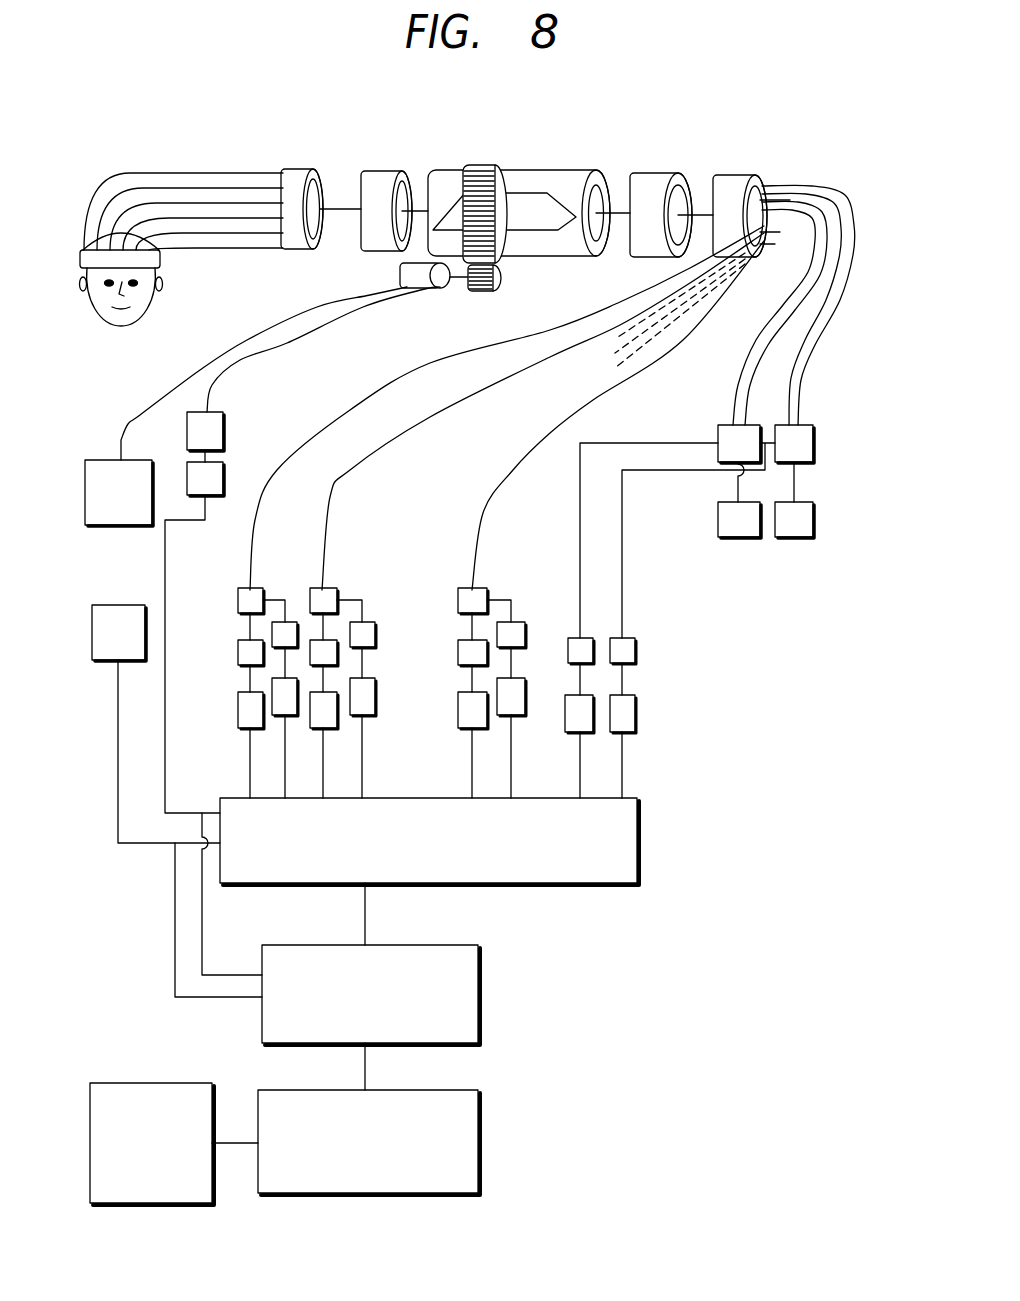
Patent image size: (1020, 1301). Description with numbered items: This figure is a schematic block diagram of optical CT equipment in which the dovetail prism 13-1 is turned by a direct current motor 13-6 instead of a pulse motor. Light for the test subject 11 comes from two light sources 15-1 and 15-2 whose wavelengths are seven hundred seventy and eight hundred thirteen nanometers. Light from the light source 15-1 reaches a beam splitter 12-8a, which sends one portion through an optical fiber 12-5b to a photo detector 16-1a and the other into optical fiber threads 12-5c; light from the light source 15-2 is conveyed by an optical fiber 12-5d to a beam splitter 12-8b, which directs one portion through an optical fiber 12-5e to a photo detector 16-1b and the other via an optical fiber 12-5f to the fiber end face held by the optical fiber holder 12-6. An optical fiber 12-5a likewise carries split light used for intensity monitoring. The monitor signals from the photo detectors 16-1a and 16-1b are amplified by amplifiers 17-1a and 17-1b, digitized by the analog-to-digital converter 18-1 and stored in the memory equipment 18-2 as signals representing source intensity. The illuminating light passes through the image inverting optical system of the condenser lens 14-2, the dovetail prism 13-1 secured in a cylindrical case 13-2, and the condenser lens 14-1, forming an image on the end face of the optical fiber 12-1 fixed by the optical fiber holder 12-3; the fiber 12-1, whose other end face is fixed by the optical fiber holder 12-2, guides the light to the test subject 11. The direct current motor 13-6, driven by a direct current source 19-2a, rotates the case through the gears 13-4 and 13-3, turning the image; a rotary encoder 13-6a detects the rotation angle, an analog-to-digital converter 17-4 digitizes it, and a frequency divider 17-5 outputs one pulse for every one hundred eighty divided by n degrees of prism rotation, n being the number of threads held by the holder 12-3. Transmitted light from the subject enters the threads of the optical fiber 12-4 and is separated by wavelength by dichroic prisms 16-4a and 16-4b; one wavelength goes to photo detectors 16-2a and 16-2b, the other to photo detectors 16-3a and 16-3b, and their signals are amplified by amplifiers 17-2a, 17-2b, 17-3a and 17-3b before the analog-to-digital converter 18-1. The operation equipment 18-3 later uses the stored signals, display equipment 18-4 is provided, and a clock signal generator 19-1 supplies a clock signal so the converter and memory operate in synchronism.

The test subject 11 is at (118, 326).
The optical fiber 12-1 is at (185, 172).
The optical fiber holder 12-2 is at (158, 258).
The optical fiber holder 12-3 is at (303, 168).
The optical fiber 12-4 is at (787, 187).
The optical fiber 12-5a is at (735, 488).
The optical fiber 12-5b is at (630, 443).
The optical fiber threads 12-5c is at (762, 355).
The optical fiber 12-5d is at (794, 488).
The optical fiber 12-5e is at (622, 542).
The optical fiber 12-5f is at (803, 363).
The optical fiber holder 12-6 is at (738, 182).
The beam splitter 12-8a is at (720, 427).
The beam splitter 12-8b is at (833, 438).
The dovetail prism 13-1 is at (528, 195).
The cylindrical case 13-2 is at (577, 177).
The gear 13-3 is at (497, 165).
The small gear 13-4 is at (485, 292).
The direct current motor 13-6 is at (400, 273).
The rotary encoder 13-6a is at (437, 288).
The condenser lens 14-1 is at (390, 170).
The condenser lens 14-2 is at (657, 178).
The light source 15-1 is at (736, 537).
The light source 15-2 is at (790, 537).
The photo detector 16-1a is at (577, 638).
The photo detector 16-1b is at (635, 643).
The photo detector 16-2a is at (238, 650).
The photo detector 16-2b is at (340, 652).
The photo detector 16-3a is at (293, 600).
The photo detector 16-3b is at (397, 612).
The dichroic prism 16-4a is at (240, 593).
The dichroic prism 16-4b is at (327, 590).
The amplifier 17-1a is at (572, 732).
The amplifier 17-1b is at (637, 713).
The amplifier 17-2a is at (238, 710).
The amplifier 17-2b is at (337, 733).
The amplifier 17-3a is at (280, 712).
The amplifier 17-3b is at (377, 705).
The analog-to-digital converter 17-4 is at (223, 420).
The frequency divider 17-5 is at (240, 455).
The analog-to-digital converter 18-1 is at (450, 883).
The memory equipment 18-2 is at (420, 1043).
The operation equipment 18-3 is at (300, 1096).
The display equipment 18-4 is at (157, 1092).
The clock signal generator 19-1 is at (100, 658).
The direct current source 19-2a is at (107, 525).